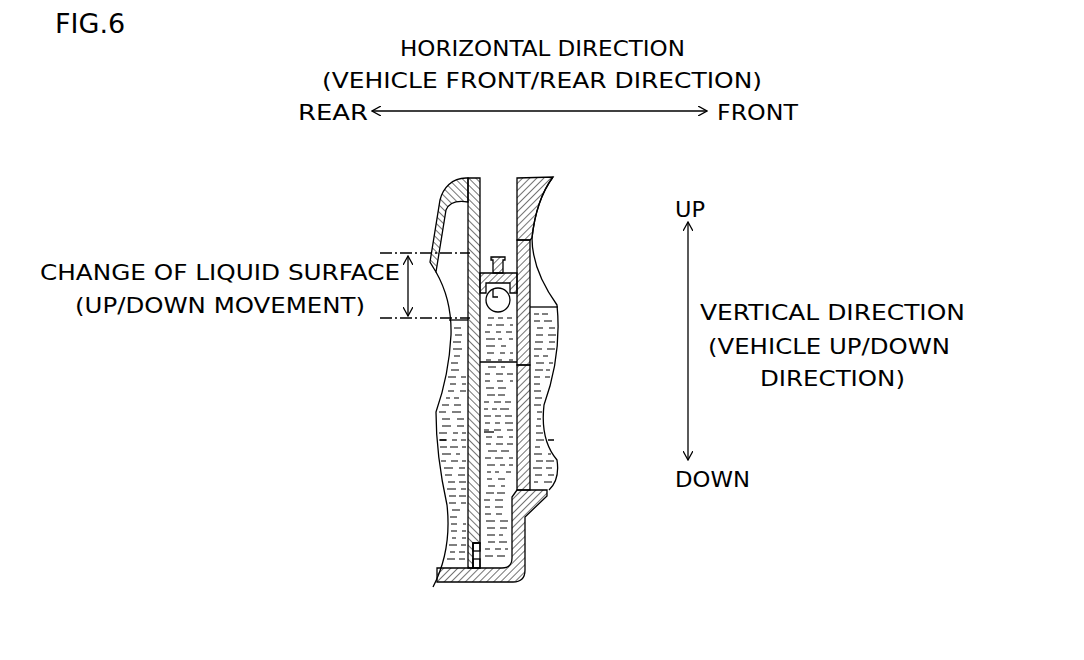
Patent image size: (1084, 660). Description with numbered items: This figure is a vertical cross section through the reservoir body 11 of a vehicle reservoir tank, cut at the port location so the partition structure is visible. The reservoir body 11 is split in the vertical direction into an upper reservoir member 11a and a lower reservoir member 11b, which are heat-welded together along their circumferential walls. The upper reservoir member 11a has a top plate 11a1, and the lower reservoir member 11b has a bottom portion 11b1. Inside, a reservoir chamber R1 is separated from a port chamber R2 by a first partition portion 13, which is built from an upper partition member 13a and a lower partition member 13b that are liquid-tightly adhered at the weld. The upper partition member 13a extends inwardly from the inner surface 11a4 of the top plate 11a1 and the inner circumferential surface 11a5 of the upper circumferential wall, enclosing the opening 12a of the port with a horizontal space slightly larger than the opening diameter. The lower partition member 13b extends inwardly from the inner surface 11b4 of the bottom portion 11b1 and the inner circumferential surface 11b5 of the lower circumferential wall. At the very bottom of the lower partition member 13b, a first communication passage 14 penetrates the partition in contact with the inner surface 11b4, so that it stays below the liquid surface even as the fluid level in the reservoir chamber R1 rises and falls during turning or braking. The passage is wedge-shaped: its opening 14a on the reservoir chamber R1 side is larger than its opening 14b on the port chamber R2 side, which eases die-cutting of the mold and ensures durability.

The reservoir body 11 is at (352, 175).
The upper reservoir member 11a is at (446, 170).
The top plate 11a1 is at (508, 259).
The inner surface of the top plate 11a4 is at (527, 287).
The inner circumferential surface of the circumferential wall portion 11a5 is at (533, 303).
The lower reservoir member 11b is at (582, 551).
The bottom portion 11b1 is at (477, 583).
The inner surface of the bottom portion 11b4 is at (527, 546).
The inner circumferential surface of the circumferential wall portion 11b5 is at (512, 469).
The opening of the port 12a is at (460, 228).
The first partition portion 13 is at (592, 365).
The upper partition member 13a is at (536, 336).
The lower partition member 13b is at (538, 418).
The first communication passage 14 is at (418, 548).
The opening of the first communication passage at the reservoir chamber side 14a is at (468, 545).
The opening of the first communication passage at the port chamber side 14b is at (472, 562).
The reservoir chamber R1 is at (460, 362).
The port chamber R2 is at (493, 432).